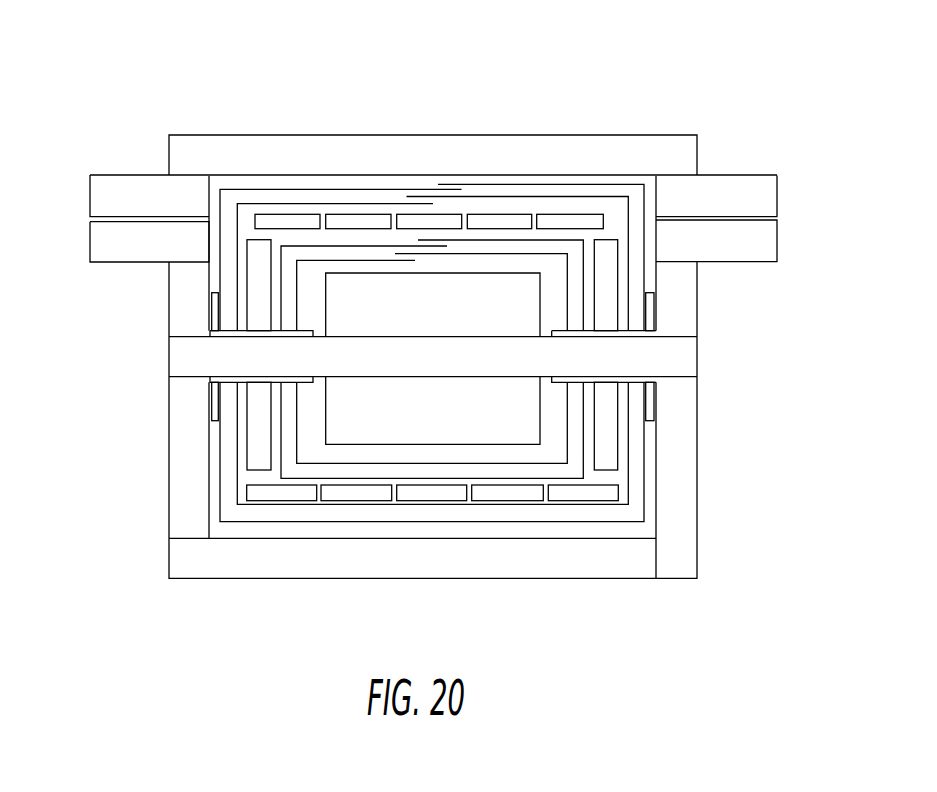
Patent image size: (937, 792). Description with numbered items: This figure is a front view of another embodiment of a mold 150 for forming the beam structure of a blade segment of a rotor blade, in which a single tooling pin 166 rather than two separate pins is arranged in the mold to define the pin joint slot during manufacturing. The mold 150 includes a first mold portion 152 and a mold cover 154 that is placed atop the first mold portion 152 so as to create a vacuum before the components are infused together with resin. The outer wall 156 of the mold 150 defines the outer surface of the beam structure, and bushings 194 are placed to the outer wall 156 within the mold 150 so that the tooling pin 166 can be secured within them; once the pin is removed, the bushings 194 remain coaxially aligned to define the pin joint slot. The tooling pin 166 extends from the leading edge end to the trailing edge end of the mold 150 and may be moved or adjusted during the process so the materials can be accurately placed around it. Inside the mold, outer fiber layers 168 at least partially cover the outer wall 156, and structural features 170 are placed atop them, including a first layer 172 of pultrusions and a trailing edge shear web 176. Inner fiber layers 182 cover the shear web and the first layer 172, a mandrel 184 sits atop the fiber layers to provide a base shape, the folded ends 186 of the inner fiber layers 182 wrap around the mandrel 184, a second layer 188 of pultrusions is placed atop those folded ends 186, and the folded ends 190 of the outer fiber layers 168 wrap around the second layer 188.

The mold 150 is at (812, 338).
The first mold portion 152 is at (168, 523).
The mold cover 154 is at (117, 172).
The outer wall 156 is at (185, 472).
The tooling pin 166 is at (238, 357).
The outer fiber layers 168 is at (623, 457).
The structural features 170 is at (343, 270).
The first layer of pultrusions 172 is at (344, 502).
The trailing edge shear web 176 is at (608, 255).
The inner fiber layers 182 is at (519, 465).
The mandrel 184 is at (518, 271).
The folded ends of the inner fiber layers 186 is at (455, 253).
The second layer of pultrusions 188 is at (417, 213).
The folded ends of the outer fiber layers 190 is at (522, 197).
The bushings 194 is at (213, 310).